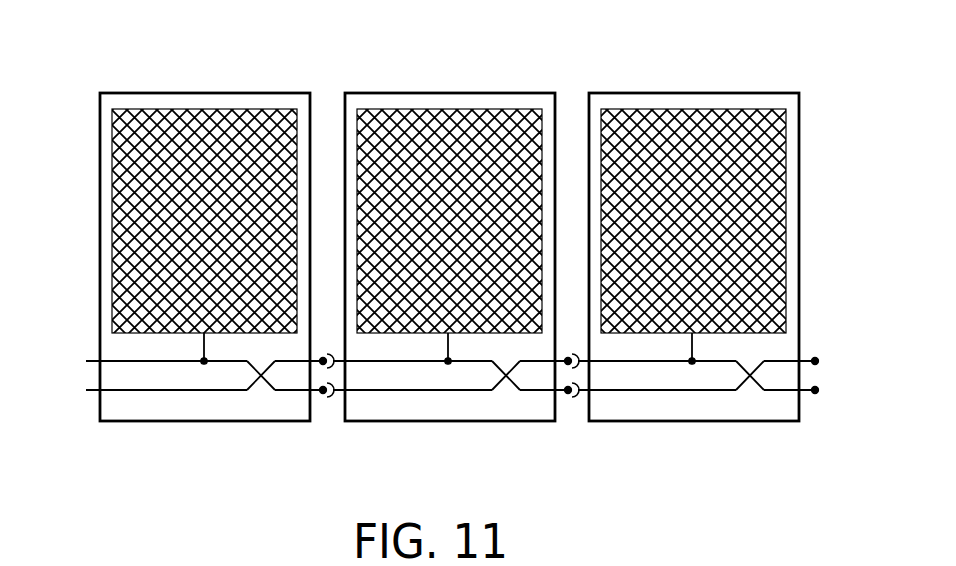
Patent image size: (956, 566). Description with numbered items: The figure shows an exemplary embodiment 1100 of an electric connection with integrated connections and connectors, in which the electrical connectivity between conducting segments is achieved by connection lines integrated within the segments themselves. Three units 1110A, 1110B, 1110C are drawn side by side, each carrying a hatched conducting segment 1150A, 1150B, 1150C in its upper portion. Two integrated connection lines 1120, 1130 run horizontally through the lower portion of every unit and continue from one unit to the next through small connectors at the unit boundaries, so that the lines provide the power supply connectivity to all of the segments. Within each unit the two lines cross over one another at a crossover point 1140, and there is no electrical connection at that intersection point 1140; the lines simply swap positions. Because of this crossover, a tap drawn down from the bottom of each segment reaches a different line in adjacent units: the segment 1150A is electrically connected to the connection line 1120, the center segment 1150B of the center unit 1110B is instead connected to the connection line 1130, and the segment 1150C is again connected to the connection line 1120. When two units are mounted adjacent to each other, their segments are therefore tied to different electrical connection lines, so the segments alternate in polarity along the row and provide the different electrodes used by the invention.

The electric connection with integrated connections and connectors 1100 is at (125, 77).
The segment unit 1110A is at (173, 421).
The segment unit 1110B is at (423, 421).
The segment unit 1110C is at (658, 421).
The connection line 1120 is at (82, 368).
The connection line 1130 is at (82, 383).
The crossover point 1140 is at (260, 393).
The segment 1150A is at (220, 113).
The segment 1150B is at (465, 113).
The segment 1150C is at (710, 113).